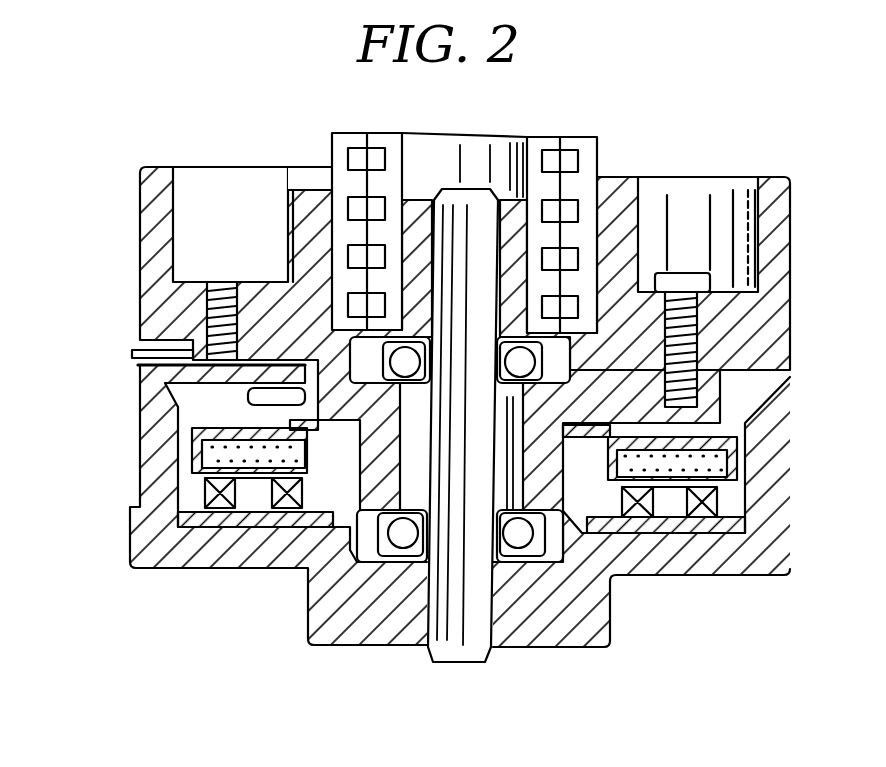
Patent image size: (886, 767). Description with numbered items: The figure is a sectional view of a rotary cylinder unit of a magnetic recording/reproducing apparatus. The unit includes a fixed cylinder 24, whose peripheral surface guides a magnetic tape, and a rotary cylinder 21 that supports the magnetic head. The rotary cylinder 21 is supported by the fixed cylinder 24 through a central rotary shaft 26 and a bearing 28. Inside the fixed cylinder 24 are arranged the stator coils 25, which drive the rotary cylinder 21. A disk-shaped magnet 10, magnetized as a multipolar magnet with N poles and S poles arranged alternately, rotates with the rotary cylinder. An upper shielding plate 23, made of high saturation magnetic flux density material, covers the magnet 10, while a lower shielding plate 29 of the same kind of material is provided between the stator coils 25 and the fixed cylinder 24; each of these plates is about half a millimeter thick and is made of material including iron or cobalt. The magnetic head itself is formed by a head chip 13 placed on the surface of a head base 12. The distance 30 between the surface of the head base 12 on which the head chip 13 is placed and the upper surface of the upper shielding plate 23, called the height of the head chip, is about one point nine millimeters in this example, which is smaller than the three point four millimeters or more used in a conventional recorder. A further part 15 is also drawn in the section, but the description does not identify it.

The magnet 10 is at (232, 418).
The head base 12 is at (266, 358).
The head chip 13 is at (130, 347).
The rotor yoke tab 15 is at (292, 392).
The rotary cylinder 21 is at (141, 215).
The upper shielding plate 23 is at (195, 436).
The fixed cylinder 24 is at (147, 477).
The stator coils 25 is at (211, 522).
The rotary shaft 26 is at (458, 612).
The bearing 28 is at (535, 345).
The lower shielding plate 29 is at (270, 480).
The distance 30 is at (140, 422).